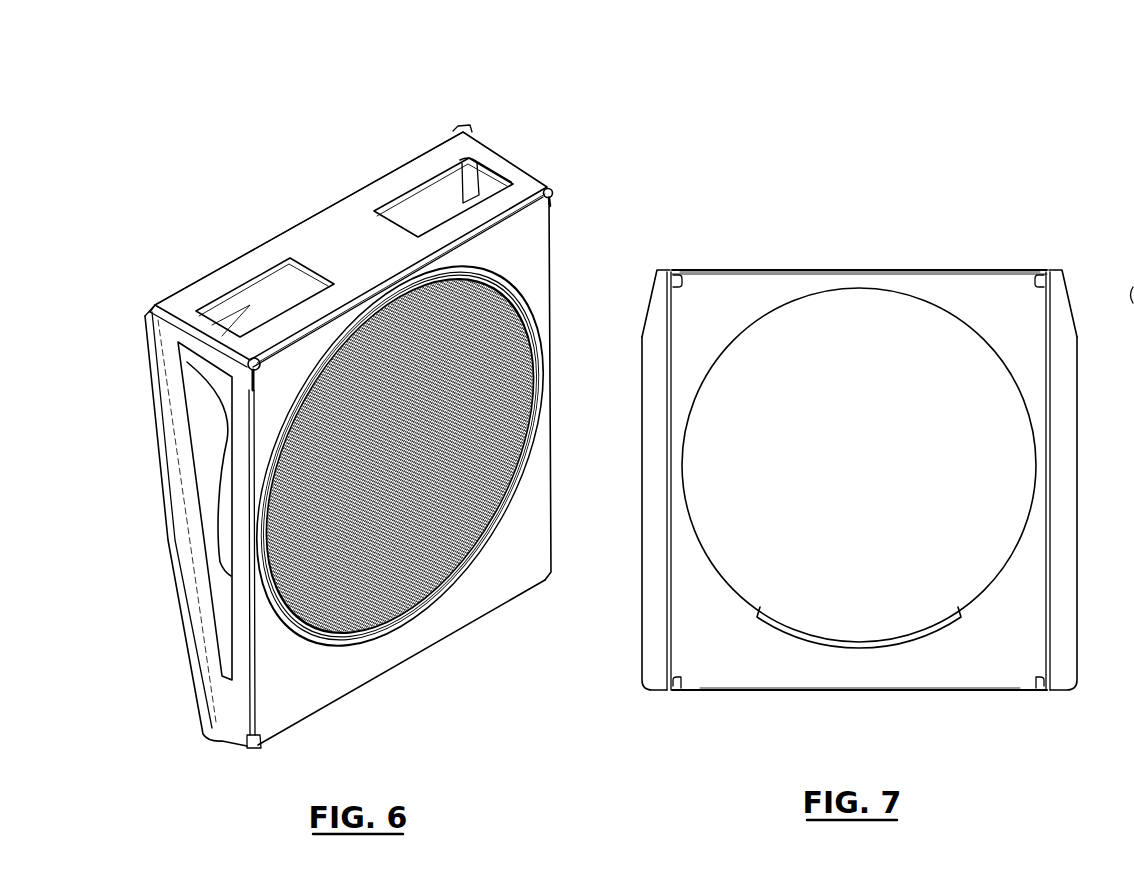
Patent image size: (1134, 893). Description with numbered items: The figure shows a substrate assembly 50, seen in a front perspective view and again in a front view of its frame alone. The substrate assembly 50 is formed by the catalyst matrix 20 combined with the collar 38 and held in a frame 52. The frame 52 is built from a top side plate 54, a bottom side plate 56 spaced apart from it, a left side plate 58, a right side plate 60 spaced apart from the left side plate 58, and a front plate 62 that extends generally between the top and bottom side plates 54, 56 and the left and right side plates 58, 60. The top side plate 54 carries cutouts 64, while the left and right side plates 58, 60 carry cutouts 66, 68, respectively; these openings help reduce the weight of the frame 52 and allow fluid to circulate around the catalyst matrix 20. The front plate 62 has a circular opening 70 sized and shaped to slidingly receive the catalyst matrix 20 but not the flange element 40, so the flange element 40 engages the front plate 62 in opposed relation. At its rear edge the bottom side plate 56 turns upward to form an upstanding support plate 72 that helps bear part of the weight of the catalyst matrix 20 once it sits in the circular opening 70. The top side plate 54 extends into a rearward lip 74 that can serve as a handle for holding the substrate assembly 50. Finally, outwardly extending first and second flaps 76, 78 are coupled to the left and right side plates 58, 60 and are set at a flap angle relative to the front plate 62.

In FIG. 6, the catalyst matrix 20 is at (523, 305).
In FIG. 6, the collar 38 is at (522, 268).
In FIG. 6, the flange element 40 is at (553, 372).
In FIG. 6, the substrate assembly 50 is at (550, 141).
In FIG. 6, the frame 52 is at (566, 197).
In FIG. 7, the frame 52 is at (977, 264).
In FIG. 6, the top side plate 54 is at (324, 224).
In FIG. 7, the top side plate 54 is at (856, 268).
In FIG. 7, the bottom side plate 56 is at (863, 692).
In FIG. 6, the left side plate 58 is at (200, 546).
In FIG. 7, the left side plate 58 is at (668, 519).
In FIG. 6, the right side plate 60 is at (468, 173).
In FIG. 7, the right side plate 60 is at (1050, 546).
In FIG. 6, the front plate 62 is at (300, 700).
In FIG. 7, the front plate 62 is at (803, 668).
In FIG. 6, the cutouts 64 is at (405, 185).
In FIG. 6, the cutout 66 is at (200, 463).
In FIG. 6, the cutout 68 is at (478, 172).
In FIG. 7, the circular opening 70 is at (733, 598).
In FIG. 7, the upstanding support plate 72 is at (832, 633).
In FIG. 7, the rearward lip 74 is at (1121, 328).
In FIG. 6, the first flap 76 is at (192, 607).
In FIG. 7, the first flap 76 is at (653, 576).
In FIG. 7, the second flap 78 is at (1060, 602).